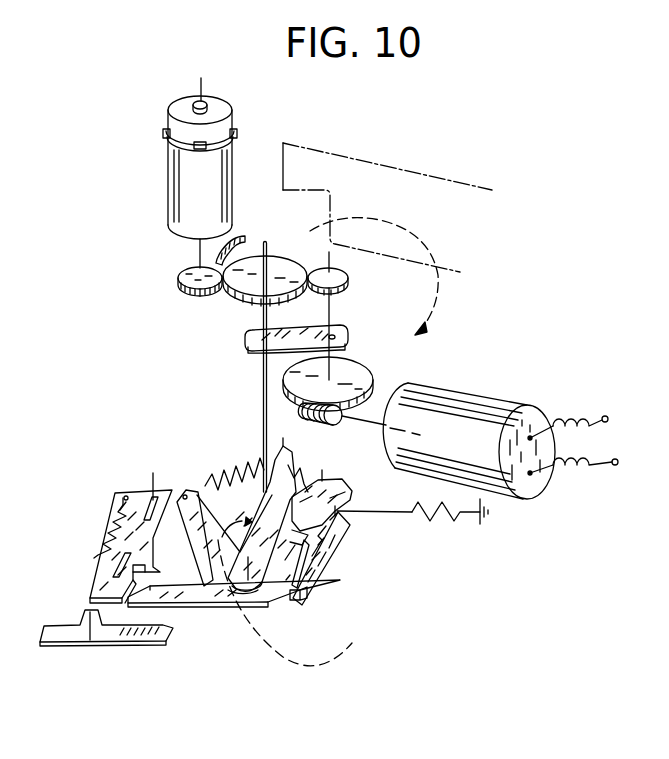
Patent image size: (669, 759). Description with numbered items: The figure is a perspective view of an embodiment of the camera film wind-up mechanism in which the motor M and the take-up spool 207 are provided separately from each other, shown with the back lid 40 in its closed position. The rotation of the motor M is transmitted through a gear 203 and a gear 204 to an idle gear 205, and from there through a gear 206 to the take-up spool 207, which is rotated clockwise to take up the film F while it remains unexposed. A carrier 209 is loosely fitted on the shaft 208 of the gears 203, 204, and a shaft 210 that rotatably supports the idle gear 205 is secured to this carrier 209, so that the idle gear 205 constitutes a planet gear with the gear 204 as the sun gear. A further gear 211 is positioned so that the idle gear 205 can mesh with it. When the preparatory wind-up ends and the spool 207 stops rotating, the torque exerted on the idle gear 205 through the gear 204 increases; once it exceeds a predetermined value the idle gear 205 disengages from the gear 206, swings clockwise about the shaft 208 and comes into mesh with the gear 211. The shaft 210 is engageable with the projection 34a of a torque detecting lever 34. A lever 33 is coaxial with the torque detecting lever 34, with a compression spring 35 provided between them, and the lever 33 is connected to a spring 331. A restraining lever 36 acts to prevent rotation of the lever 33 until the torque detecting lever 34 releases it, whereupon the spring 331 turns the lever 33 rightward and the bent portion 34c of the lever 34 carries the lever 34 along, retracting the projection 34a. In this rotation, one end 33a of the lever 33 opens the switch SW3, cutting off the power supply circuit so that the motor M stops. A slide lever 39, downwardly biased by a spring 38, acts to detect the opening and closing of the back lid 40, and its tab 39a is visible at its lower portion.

The film F is at (453, 189).
The motor M is at (470, 407).
The gear 203 is at (355, 371).
The gear 204 is at (352, 274).
The idle gear 205 is at (290, 260).
The gear 206 is at (185, 273).
The take-up spool 207 is at (178, 178).
The shaft 208 is at (340, 302).
The carrier 209 is at (350, 330).
The shaft 210 is at (262, 378).
The gear 211 is at (236, 242).
The lever 33 is at (197, 592).
The one end of lever 33 33a is at (350, 516).
The spring 331 is at (434, 520).
The torque detecting lever 34 is at (252, 584).
The projection 34a is at (234, 516).
The bent portion 34c is at (272, 585).
The compression spring 35 is at (204, 486).
The restraining lever 36 is at (322, 484).
The spring 38 is at (76, 588).
The slide lever 39 is at (98, 593).
The tab 39a is at (148, 570).
The back lid 40 is at (90, 640).
The switch SW3 is at (310, 590).